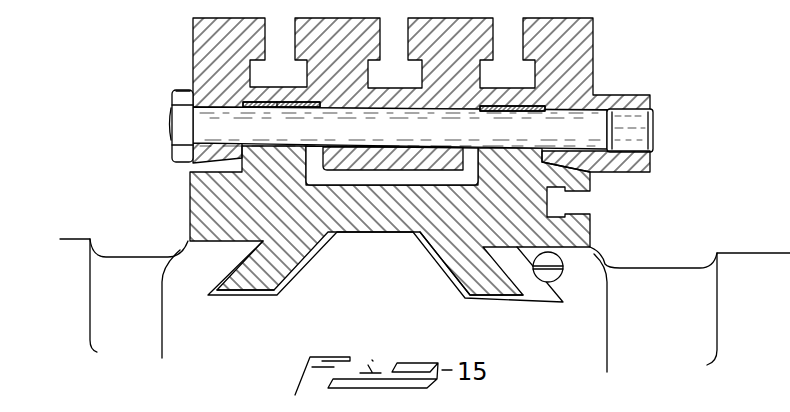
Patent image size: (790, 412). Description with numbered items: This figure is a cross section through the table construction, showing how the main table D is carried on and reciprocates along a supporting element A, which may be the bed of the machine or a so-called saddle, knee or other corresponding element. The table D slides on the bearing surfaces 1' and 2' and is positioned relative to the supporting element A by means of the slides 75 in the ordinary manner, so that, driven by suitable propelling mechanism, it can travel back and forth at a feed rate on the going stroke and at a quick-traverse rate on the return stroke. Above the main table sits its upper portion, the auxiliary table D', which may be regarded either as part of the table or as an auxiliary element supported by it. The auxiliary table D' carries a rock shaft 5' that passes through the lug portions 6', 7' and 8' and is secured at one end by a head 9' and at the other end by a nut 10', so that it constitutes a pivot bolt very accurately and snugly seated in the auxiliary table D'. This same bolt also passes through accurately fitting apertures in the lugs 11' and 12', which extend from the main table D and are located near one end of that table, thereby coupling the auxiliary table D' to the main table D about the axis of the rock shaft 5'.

The auxiliary table D' is at (427, 90).
The main table D is at (368, 220).
The supporting element A is at (385, 267).
The bearing surface 1' is at (425, 305).
The bearing surface 2' is at (560, 272).
The rock shaft 5' is at (400, 128).
The lug portion 6' is at (596, 179).
The lug portion 7' is at (392, 166).
The lug portion 8' is at (166, 134).
The head 9' is at (653, 130).
The nut 10' is at (169, 84).
The lug 11' is at (281, 86).
The lug 12' is at (512, 90).
The slides 75 is at (238, 266).